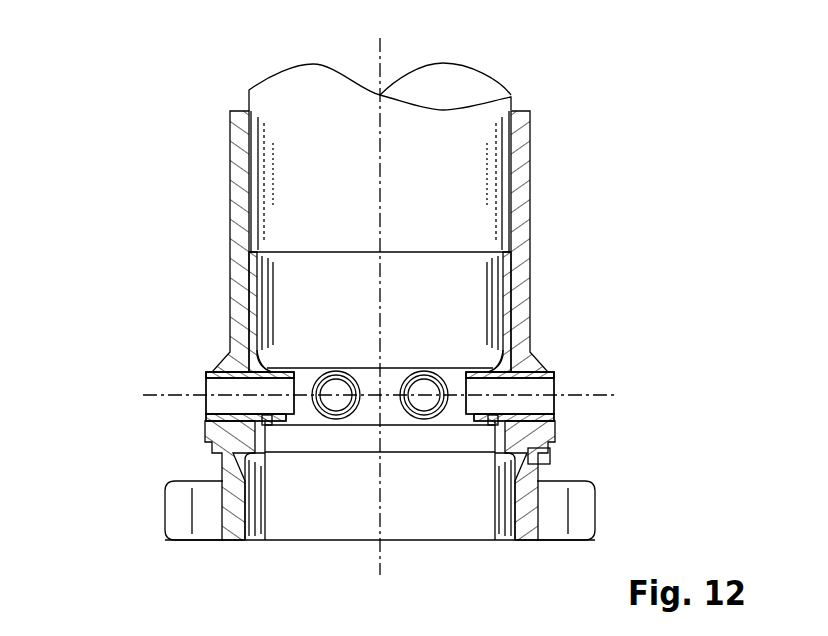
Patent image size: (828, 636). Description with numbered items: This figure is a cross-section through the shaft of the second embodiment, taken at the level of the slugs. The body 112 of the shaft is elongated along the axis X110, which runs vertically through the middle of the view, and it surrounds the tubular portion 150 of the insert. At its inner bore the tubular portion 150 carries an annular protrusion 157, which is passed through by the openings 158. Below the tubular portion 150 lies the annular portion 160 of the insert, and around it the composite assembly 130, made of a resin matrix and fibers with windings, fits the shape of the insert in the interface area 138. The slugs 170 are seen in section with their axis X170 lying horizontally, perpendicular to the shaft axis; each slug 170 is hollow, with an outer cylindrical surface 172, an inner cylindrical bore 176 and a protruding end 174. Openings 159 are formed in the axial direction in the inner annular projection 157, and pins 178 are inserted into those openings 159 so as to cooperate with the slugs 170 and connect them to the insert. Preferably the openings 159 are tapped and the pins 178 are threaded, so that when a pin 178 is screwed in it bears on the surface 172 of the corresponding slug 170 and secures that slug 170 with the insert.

The body 112 is at (513, 165).
The tubular portion 150 is at (505, 312).
The annular protrusion 157 is at (368, 380).
The openings 158 is at (279, 364).
The openings 159 is at (279, 429).
The annular portion 160 is at (532, 448).
The composite assembly 130 is at (540, 427).
The interface area 138 is at (196, 407).
The slugs 170 is at (700, 335).
The outer cylindrical surface 172 is at (555, 364).
The protruding end 174 is at (553, 413).
The inner cylindrical bore 176 is at (528, 381).
The pins 178 is at (262, 420).
The axis X110 is at (379, 322).
The axis X170 is at (411, 398).